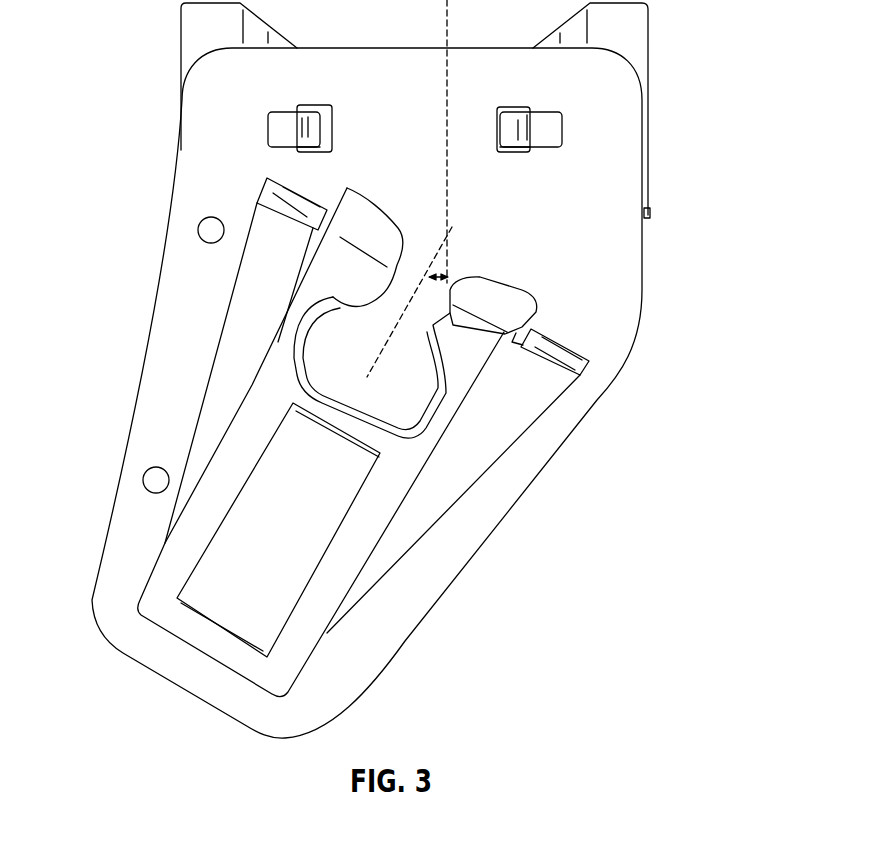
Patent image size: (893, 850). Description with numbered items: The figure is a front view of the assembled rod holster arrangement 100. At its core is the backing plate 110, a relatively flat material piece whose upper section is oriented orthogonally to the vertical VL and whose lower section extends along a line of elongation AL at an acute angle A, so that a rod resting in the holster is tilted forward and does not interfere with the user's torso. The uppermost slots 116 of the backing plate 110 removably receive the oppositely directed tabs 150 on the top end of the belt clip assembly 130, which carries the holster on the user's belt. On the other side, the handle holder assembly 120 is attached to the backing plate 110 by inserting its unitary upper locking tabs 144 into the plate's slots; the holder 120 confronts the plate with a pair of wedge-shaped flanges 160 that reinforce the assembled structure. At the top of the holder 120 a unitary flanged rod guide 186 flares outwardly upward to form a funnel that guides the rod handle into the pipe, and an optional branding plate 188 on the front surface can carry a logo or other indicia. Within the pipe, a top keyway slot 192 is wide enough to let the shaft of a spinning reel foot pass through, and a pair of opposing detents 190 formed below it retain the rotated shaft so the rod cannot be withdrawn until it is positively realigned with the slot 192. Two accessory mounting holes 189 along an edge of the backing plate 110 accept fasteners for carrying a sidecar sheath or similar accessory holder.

The rod holster arrangement 100 is at (428, 370).
The backing plate 110 is at (528, 456).
The uppermost slots 116 is at (322, 150).
The handle holder assembly 120 is at (316, 606).
The belt clip assembly 130 is at (628, 50).
The upper locking tabs 144 is at (283, 193).
The tabs 150 is at (283, 125).
The wedge-shaped flanges 160 is at (250, 290).
The flanged rod guide 186 is at (500, 300).
The branding plate 188 is at (297, 541).
The accessory mounting holes 189 is at (198, 230).
The detents 190 is at (312, 333).
The top keyway slot 192 is at (417, 270).
The vertical VL is at (448, 202).
The line of elongation AL is at (427, 323).
The acute angle A is at (433, 273).